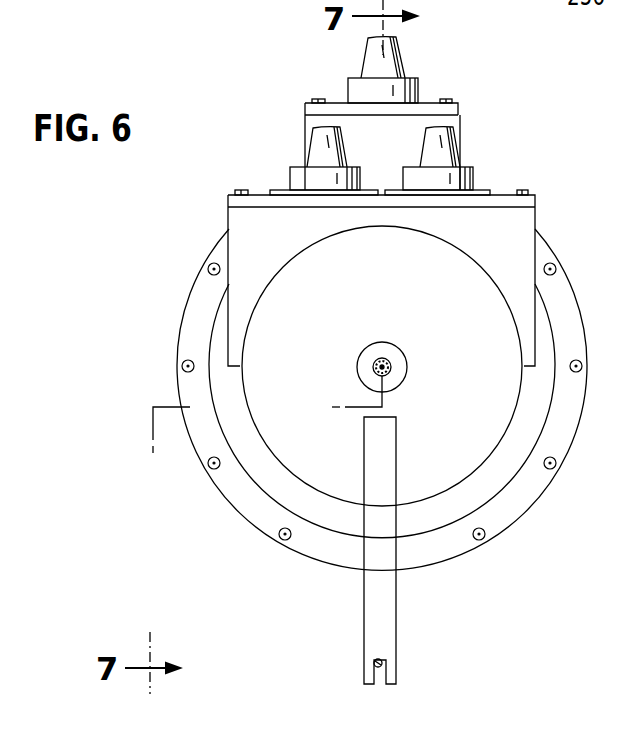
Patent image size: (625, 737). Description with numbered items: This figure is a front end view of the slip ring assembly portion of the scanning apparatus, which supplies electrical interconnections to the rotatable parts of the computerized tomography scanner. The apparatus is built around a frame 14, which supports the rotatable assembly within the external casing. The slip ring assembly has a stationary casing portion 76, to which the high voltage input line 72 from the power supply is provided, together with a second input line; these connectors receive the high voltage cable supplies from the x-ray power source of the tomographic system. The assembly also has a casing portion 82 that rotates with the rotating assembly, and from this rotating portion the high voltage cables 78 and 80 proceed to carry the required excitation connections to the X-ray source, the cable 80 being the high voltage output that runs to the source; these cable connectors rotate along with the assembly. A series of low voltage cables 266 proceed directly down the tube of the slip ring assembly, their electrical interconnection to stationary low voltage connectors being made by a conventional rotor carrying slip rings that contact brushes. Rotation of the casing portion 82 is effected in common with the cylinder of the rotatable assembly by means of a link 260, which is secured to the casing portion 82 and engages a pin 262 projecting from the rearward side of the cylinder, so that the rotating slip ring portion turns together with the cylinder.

The frame 14 is at (226, 516).
The high voltage input line 72 is at (392, 60).
The casing portion 76 is at (450, 123).
The cable 78 is at (446, 152).
The cable 80 is at (320, 140).
The casing portion 82 is at (481, 371).
The low voltage cables 266 is at (348, 373).
The link 260 is at (376, 608).
The pin 262 is at (373, 661).